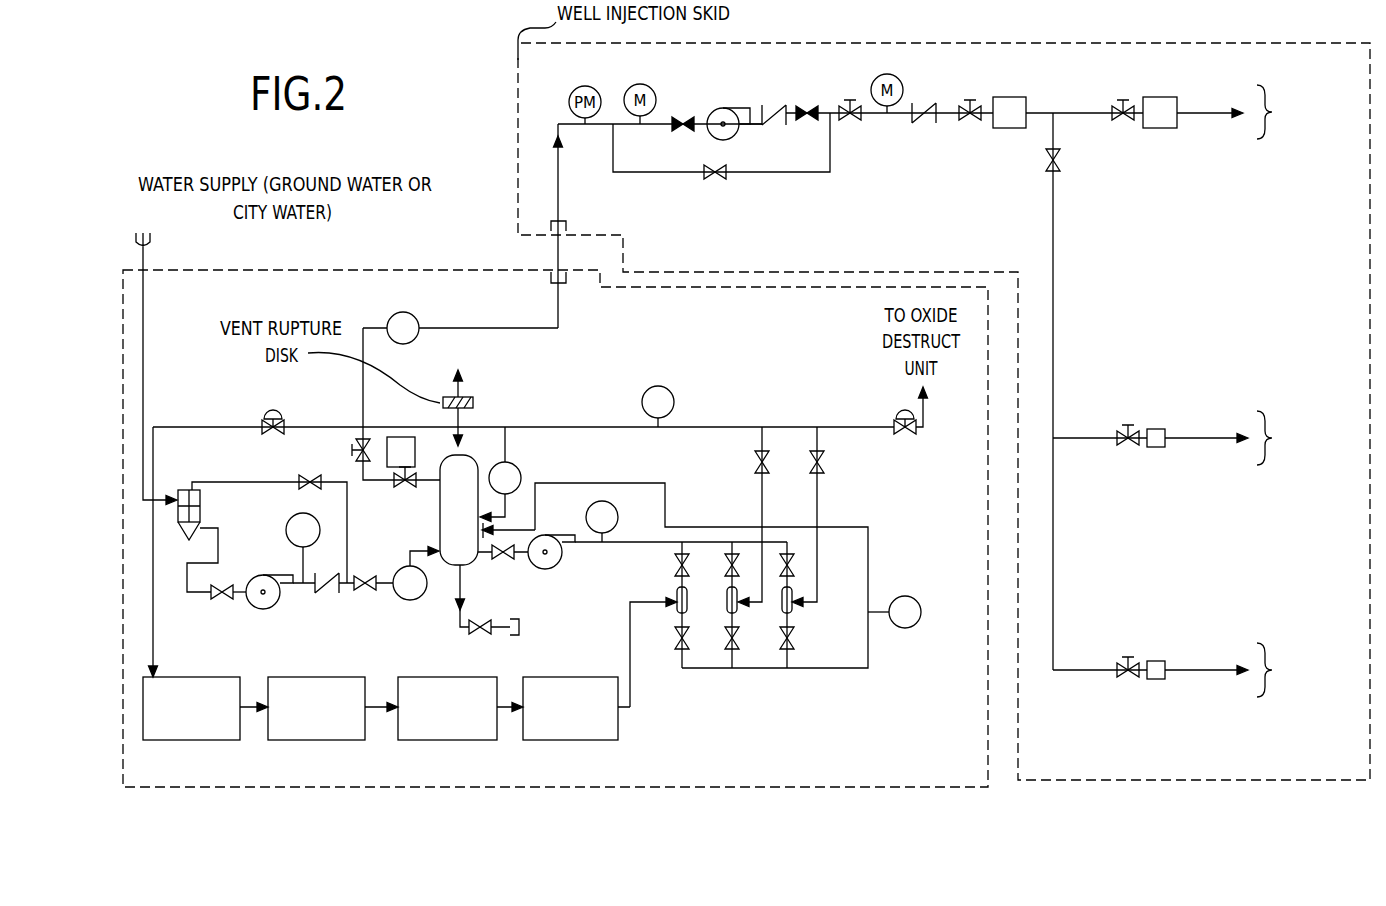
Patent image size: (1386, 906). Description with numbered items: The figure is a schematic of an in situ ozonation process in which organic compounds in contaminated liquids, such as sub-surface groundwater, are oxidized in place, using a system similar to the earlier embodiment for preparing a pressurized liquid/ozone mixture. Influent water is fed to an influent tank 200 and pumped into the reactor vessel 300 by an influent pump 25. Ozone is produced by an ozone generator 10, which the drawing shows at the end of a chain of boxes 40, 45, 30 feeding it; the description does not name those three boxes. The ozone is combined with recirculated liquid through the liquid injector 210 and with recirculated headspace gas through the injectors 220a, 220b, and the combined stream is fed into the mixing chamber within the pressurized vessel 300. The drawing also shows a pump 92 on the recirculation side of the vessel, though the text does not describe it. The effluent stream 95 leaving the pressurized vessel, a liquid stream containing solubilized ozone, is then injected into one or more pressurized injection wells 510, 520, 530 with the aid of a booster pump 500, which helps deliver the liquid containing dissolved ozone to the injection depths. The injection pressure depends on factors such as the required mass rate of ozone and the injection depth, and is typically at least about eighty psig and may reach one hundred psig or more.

The ozone generator 10 is at (556, 722).
The influent pump 25 is at (265, 575).
The oxygen concentrator 30 is at (433, 722).
The air compressor 40 is at (178, 722).
The air dryer 45 is at (303, 722).
The recirculation pump 92 is at (553, 560).
The effluent stream 95 is at (424, 485).
The influent tank 200 is at (185, 490).
The injector 210 is at (682, 610).
The injector 220a is at (735, 608).
The injector 220b is at (790, 608).
The reactor vessel 300 is at (462, 465).
The booster pump 500 is at (730, 107).
The pressurized injection well 510 is at (1195, 113).
The pressurized injection well 520 is at (1200, 438).
The pressurized injection well 530 is at (1200, 670).